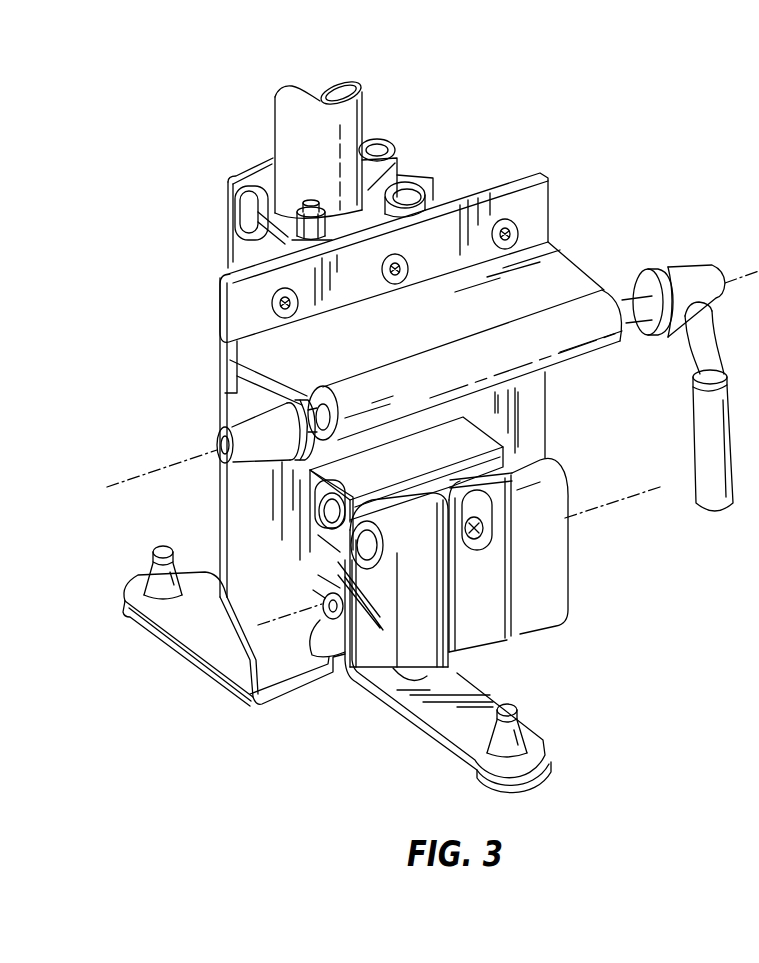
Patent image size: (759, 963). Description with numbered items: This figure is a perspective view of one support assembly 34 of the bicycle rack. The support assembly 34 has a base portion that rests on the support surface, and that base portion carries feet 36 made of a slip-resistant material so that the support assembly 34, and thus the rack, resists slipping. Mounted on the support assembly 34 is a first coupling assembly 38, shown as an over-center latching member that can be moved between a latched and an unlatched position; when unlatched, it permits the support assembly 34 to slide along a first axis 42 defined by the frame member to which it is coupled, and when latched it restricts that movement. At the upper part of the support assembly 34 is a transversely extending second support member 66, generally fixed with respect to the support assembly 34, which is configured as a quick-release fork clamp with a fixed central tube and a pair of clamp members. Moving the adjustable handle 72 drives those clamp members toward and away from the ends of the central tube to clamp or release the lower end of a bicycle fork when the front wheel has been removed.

The support assembly 34 is at (537, 202).
The feet 36 is at (525, 737).
The first coupling assembly 38 is at (547, 570).
The first axis 42 is at (609, 503).
The second support member 66 is at (573, 345).
The adjustable handle 72 is at (715, 490).